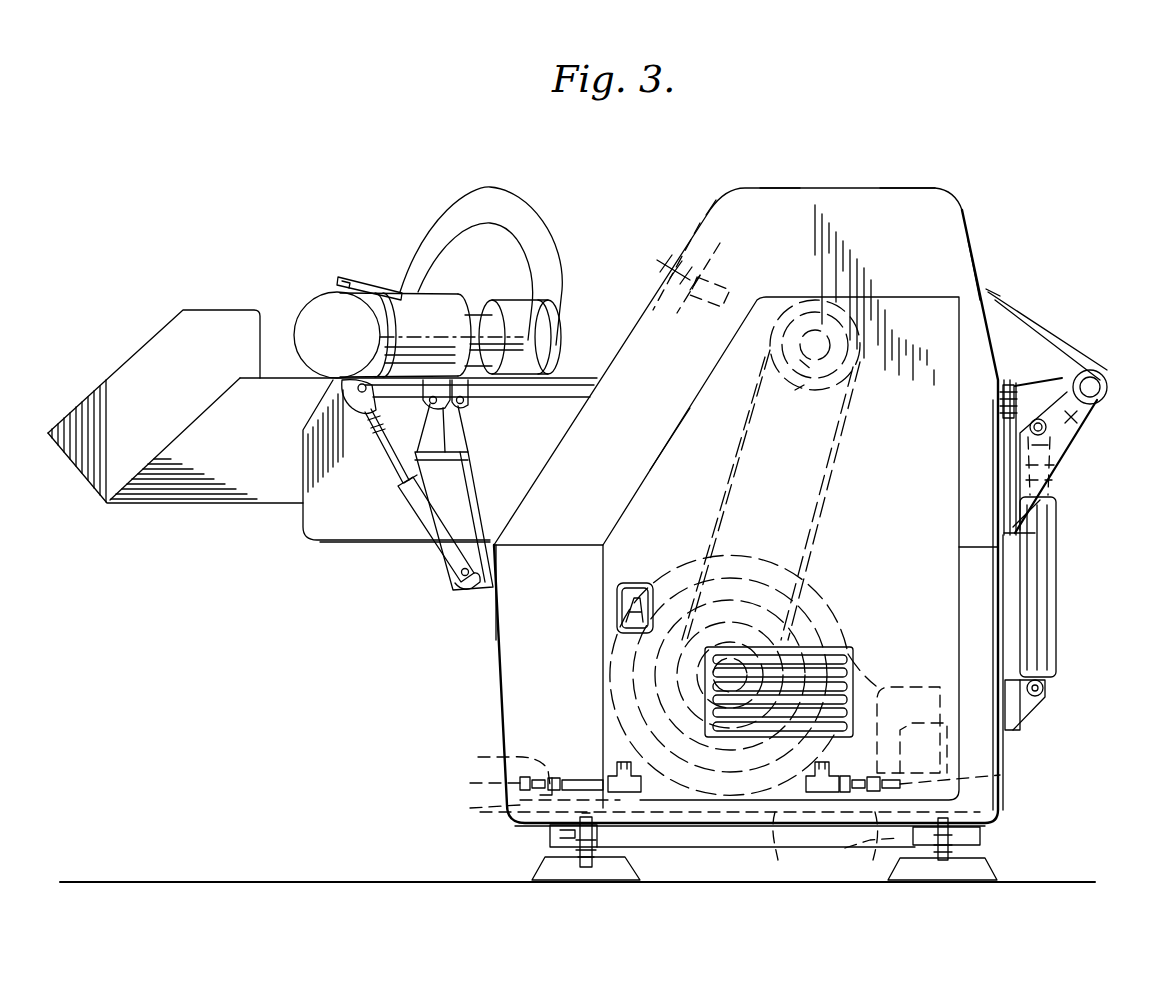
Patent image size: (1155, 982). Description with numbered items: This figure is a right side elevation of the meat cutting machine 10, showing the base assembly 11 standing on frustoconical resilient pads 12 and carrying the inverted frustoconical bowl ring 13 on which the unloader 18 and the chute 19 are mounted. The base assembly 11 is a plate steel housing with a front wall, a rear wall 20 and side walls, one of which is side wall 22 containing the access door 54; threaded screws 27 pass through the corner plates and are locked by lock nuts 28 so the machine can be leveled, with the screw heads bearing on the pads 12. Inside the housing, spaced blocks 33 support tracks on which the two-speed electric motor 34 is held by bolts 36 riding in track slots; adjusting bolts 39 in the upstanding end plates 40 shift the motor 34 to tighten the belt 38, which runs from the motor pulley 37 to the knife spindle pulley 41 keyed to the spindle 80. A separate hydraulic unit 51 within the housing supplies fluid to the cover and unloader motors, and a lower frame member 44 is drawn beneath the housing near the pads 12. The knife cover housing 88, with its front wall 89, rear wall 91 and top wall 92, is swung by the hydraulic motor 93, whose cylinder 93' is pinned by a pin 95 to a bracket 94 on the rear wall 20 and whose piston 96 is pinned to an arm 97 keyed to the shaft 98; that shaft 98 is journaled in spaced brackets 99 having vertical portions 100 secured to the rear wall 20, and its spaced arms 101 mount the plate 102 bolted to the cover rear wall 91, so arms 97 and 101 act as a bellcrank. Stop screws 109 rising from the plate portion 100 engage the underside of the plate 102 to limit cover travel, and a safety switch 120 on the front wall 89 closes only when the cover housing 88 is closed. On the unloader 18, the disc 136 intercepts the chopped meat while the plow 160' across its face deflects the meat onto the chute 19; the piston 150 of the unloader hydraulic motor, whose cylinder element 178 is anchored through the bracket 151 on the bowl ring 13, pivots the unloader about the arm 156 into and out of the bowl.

The meat cutting machine 10 is at (272, 202).
The base assembly 11 is at (495, 620).
The frustoconical resilient pads 12 is at (540, 862).
The bowl ring 13 is at (355, 545).
The unloader 18 is at (335, 308).
The chute 19 is at (170, 490).
The rear wall 20 is at (1003, 612).
The side wall 22 is at (500, 650).
The threaded screws 27 is at (580, 850).
The lock nuts 28 is at (550, 833).
The spaced blocks 33 is at (710, 837).
The two-speed electric motor 34 is at (812, 598).
The bolts 36 is at (612, 760).
The motor pulley 37 is at (705, 663).
The belt 38 is at (832, 470).
The adjusting bolts 39 is at (470, 783).
The upstanding end plates 40 is at (478, 757).
The knife spindle pulley 41 is at (818, 303).
The rail 44 is at (658, 840).
The hydraulic unit 51 is at (880, 688).
The door 54 is at (672, 428).
The spindle 80 is at (800, 392).
The cover housing portion 88 is at (905, 190).
The front wall 89 is at (700, 212).
The rear wall 91 is at (975, 238).
The top wall 92 is at (797, 168).
The hydraulic motor 93 is at (1062, 587).
The cylinder 93' is at (1067, 517).
The bracket 94 is at (1030, 712).
The pin 95 is at (1045, 688).
The piston 96 is at (1052, 462).
The arm 97 is at (1082, 418).
The shaft 98 is at (1100, 372).
The spaced brackets 99 is at (1050, 432).
The vertical portions 100 is at (1003, 460).
The spaced arms 101 is at (1040, 342).
The plate 102 is at (1000, 318).
The screws 109 is at (1003, 408).
The safety switch 120 is at (658, 260).
The disc 136 is at (470, 195).
The piston 150 is at (382, 470).
The bracket 151 is at (478, 490).
The arm 156 is at (465, 395).
The plow 160' is at (369, 258).
The hydraulic cylinder 178 is at (440, 553).